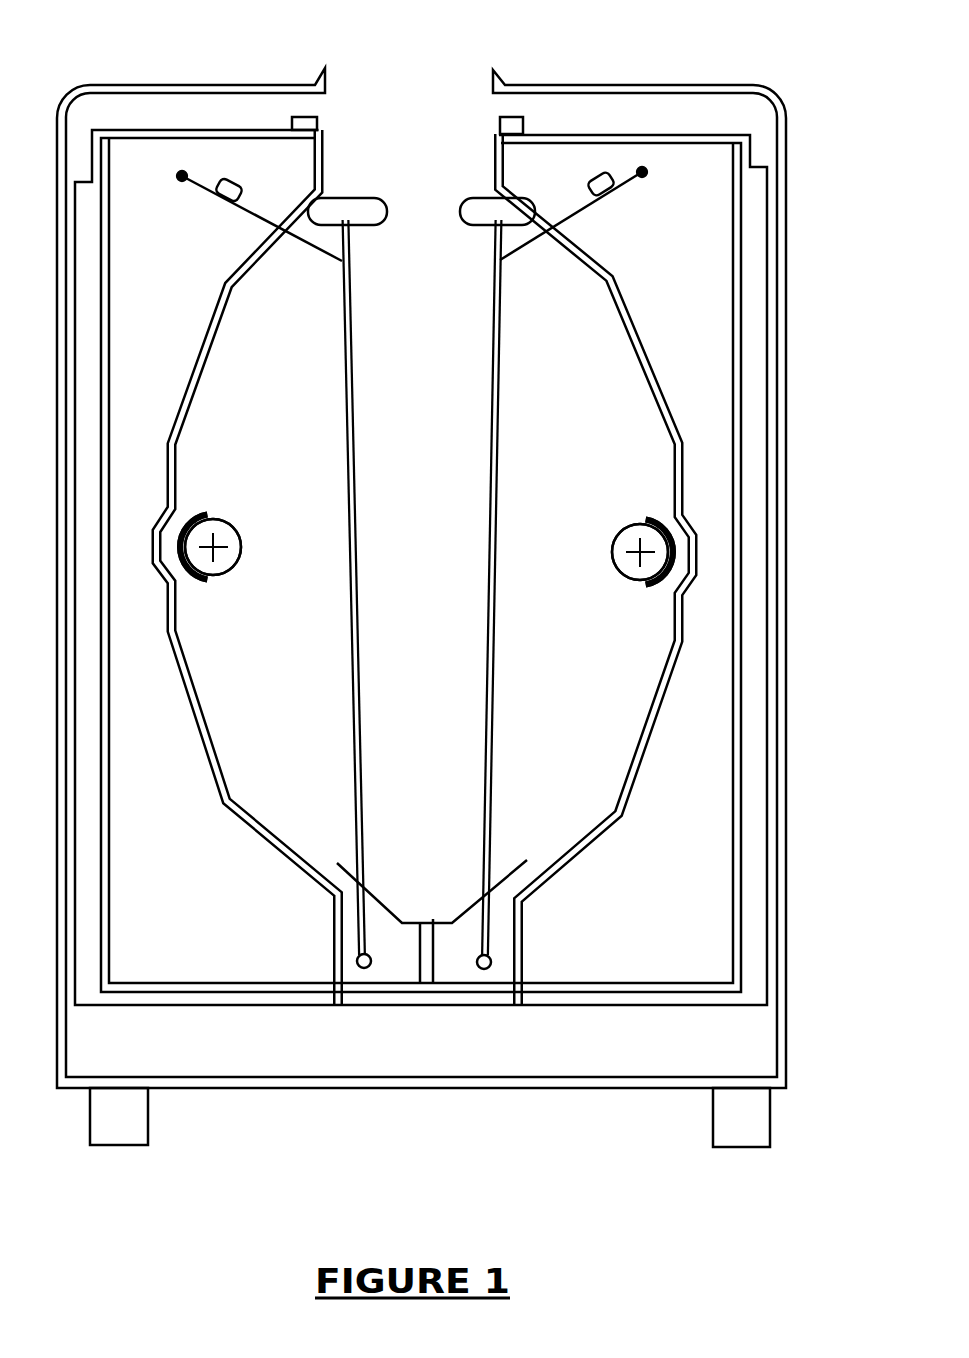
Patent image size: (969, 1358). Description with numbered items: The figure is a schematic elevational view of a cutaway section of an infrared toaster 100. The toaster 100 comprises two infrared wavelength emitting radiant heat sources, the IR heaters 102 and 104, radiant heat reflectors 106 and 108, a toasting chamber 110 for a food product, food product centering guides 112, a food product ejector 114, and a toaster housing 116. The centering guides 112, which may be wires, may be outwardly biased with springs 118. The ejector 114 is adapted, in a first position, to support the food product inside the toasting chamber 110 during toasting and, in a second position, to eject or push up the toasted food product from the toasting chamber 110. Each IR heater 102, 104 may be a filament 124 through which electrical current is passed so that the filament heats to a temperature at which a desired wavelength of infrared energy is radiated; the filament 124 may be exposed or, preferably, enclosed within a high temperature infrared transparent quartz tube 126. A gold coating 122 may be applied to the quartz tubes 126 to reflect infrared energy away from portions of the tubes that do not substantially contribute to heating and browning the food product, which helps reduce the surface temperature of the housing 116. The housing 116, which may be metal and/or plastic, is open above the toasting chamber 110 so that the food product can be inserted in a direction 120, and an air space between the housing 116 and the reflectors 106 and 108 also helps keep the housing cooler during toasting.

The infrared toaster 100 is at (230, 1207).
The IR heater 102 is at (213, 492).
The IR heater 104 is at (640, 500).
The radiant heat reflector 106 is at (227, 315).
The radiant heat reflector 108 is at (615, 313).
The toasting chamber 110 is at (440, 566).
The food product centering guide 112 is at (352, 430).
The food product ejector 114 is at (392, 907).
The toaster housing 116 is at (777, 100).
The spring 118 is at (215, 198).
The direction 120 is at (413, 82).
The gold coating 122 is at (193, 580).
The filament 124 is at (217, 543).
The quartz tube 126 is at (235, 575).